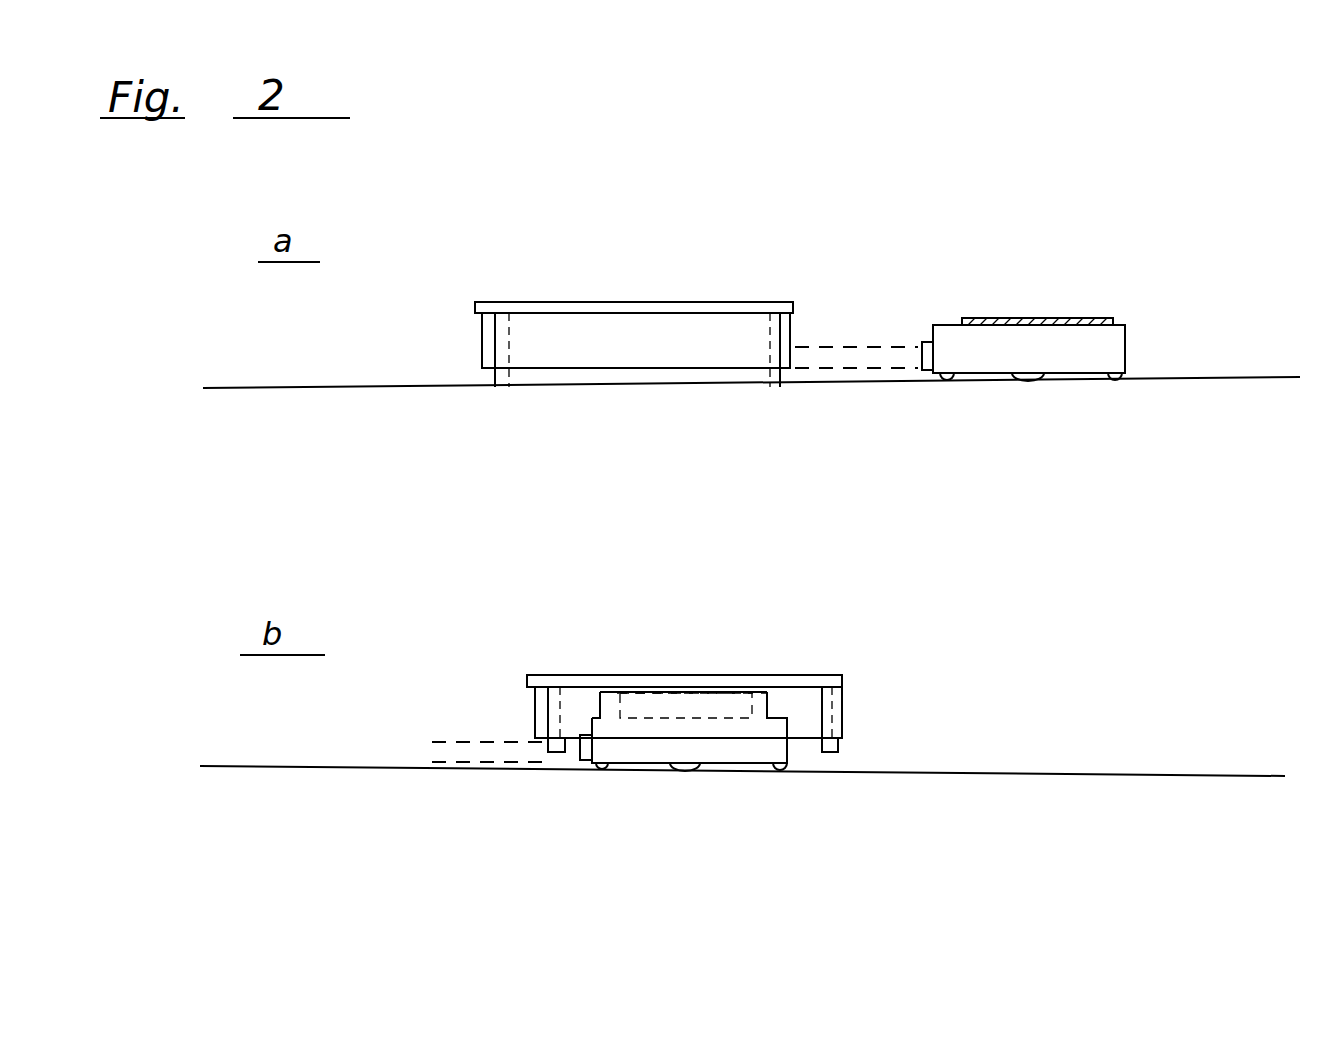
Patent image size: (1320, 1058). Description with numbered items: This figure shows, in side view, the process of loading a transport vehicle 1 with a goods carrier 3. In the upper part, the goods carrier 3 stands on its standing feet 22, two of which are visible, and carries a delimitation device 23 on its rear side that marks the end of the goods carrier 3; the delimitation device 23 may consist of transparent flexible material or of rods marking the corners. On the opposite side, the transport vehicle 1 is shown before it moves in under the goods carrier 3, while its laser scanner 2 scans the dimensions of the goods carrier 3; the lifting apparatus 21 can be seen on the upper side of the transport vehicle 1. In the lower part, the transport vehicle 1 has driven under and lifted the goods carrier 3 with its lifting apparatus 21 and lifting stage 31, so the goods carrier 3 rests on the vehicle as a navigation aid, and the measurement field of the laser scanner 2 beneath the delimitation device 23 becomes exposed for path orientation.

The transport vehicle 1 is at (998, 343).
The laser scanner 2 is at (925, 342).
The goods carrier 3 is at (687, 302).
The lifting apparatus 21 is at (985, 322).
The standing feet 22 is at (775, 372).
The delimitation device 23 is at (482, 342).
The lifting stage 31 is at (712, 690).